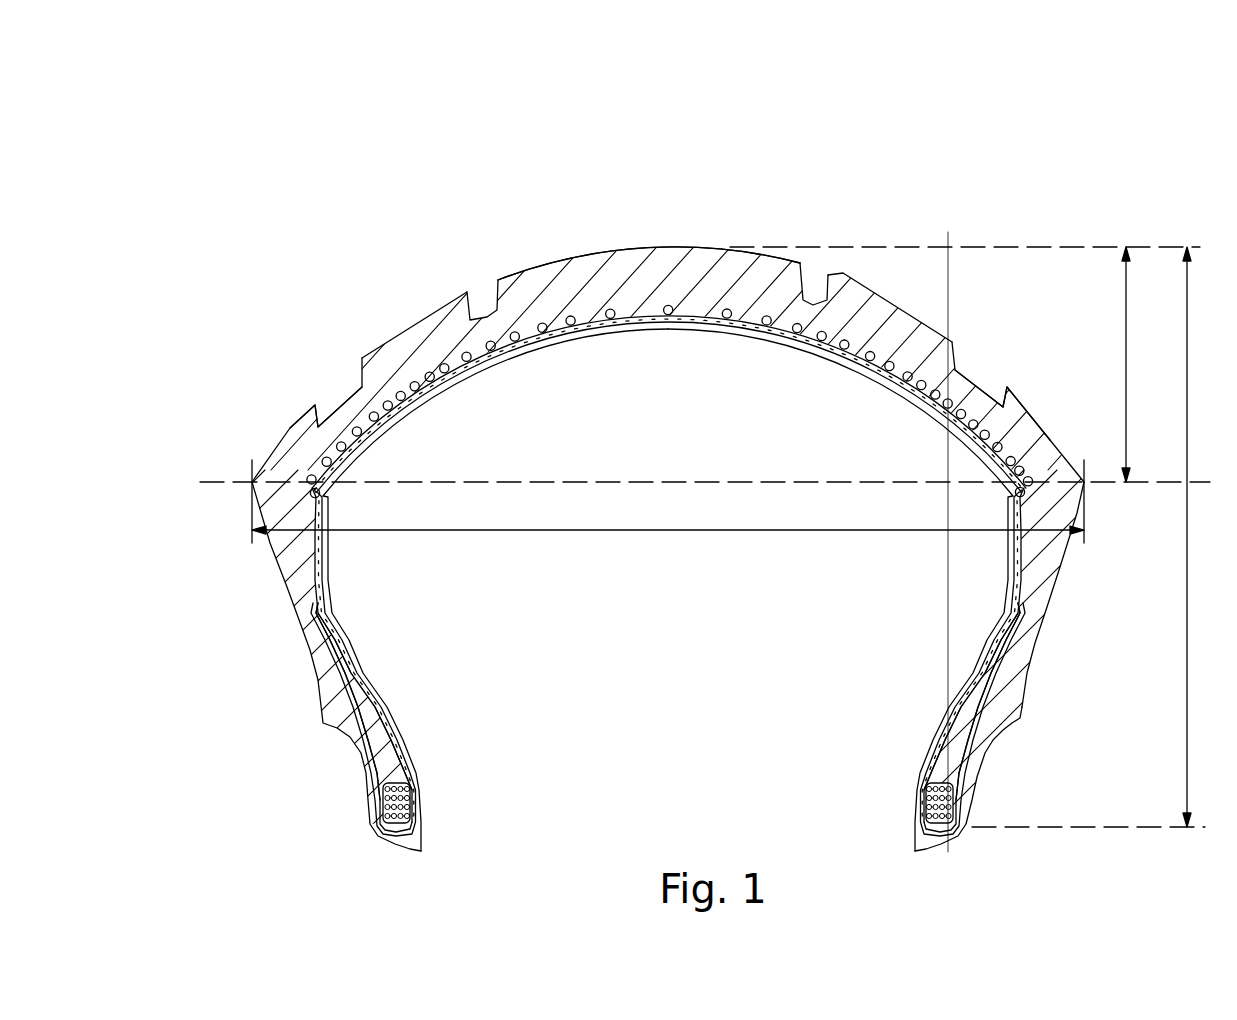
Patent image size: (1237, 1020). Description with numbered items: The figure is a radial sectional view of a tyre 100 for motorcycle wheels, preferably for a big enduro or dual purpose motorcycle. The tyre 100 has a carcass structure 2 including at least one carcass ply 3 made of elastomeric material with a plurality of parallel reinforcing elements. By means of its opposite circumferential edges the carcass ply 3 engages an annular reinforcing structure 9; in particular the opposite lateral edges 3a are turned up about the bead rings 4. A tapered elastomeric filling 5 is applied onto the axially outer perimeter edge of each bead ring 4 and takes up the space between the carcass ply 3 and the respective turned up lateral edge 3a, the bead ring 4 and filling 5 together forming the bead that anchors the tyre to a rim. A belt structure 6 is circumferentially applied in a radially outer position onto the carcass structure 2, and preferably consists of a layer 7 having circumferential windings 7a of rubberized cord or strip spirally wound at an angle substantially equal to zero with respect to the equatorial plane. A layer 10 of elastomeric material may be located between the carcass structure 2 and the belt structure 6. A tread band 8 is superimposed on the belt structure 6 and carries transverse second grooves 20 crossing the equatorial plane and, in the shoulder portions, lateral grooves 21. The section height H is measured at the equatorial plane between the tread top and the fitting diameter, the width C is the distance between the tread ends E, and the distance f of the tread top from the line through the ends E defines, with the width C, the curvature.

The tyre 100 is at (497, 175).
The carcass structure 2 is at (1027, 586).
The carcass ply 3 is at (1023, 603).
The lateral edges of the carcass ply 3a is at (320, 660).
The bead ring 4 is at (408, 790).
The tapered elastomeric filling 5 is at (363, 710).
The belt structure 6 is at (314, 497).
The layer 7 is at (613, 297).
The circumferential windings 7a is at (768, 312).
The tread band 8 is at (678, 240).
The annular reinforcing structure 9 is at (967, 724).
The layer of elastomeric material 10 is at (407, 412).
The second grooves 20 is at (482, 302).
The lateral grooves 21 is at (342, 395).
The ends of the tread E is at (252, 482).
The width C is at (641, 537).
The distance of the top of the tread f is at (1127, 370).
The height of the section H is at (1213, 530).